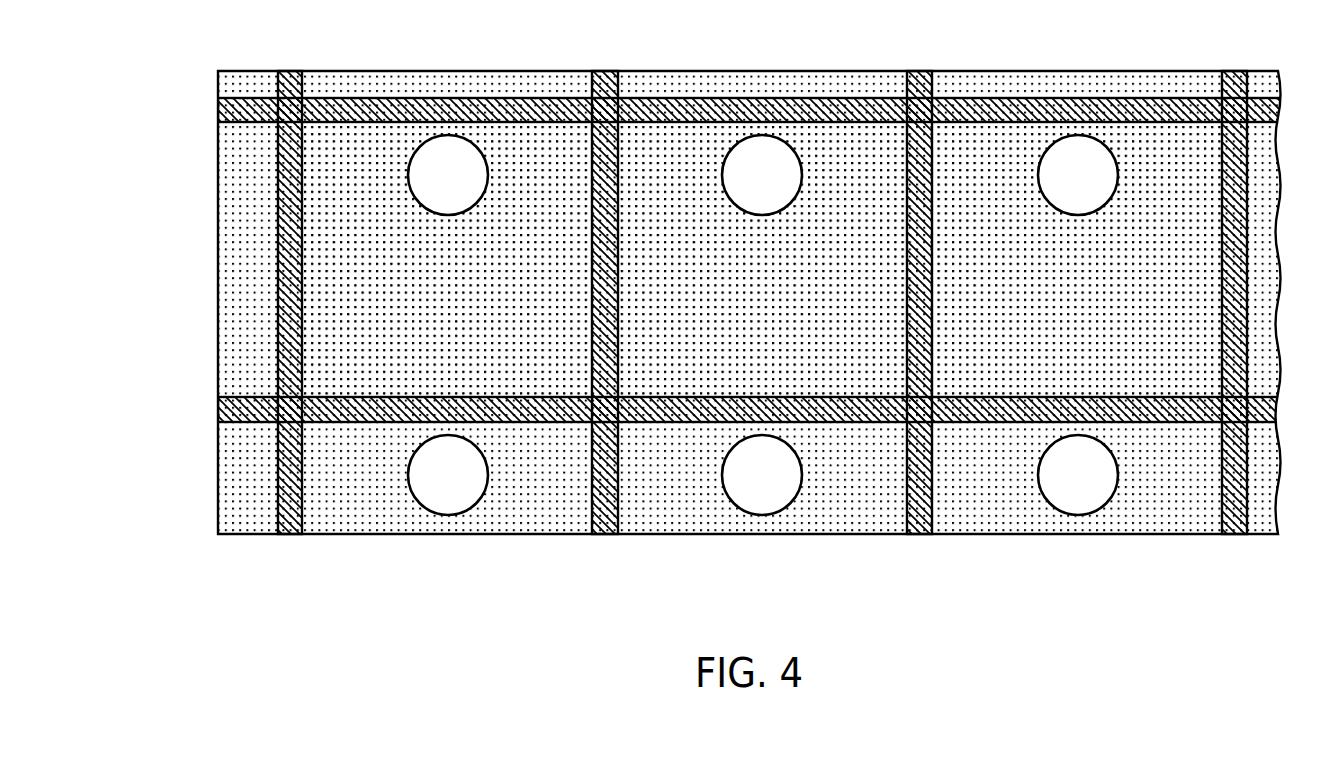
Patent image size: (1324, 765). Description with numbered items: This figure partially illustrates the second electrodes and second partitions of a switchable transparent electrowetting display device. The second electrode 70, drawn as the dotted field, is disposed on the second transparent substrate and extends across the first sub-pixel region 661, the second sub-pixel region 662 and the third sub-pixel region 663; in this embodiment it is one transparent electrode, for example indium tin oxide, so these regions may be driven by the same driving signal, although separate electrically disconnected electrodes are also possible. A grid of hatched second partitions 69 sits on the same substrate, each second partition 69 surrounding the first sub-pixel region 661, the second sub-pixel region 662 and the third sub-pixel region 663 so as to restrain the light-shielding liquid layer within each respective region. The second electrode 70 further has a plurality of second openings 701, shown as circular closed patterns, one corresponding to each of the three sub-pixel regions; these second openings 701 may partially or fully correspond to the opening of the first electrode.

The second partition 69 is at (433, 104).
The second electrode 70 is at (332, 327).
The second opening 701 is at (423, 191).
The first sub-pixel region 661 is at (466, 347).
The second sub-pixel region 662 is at (780, 347).
The third sub-pixel region 663 is at (1094, 347).